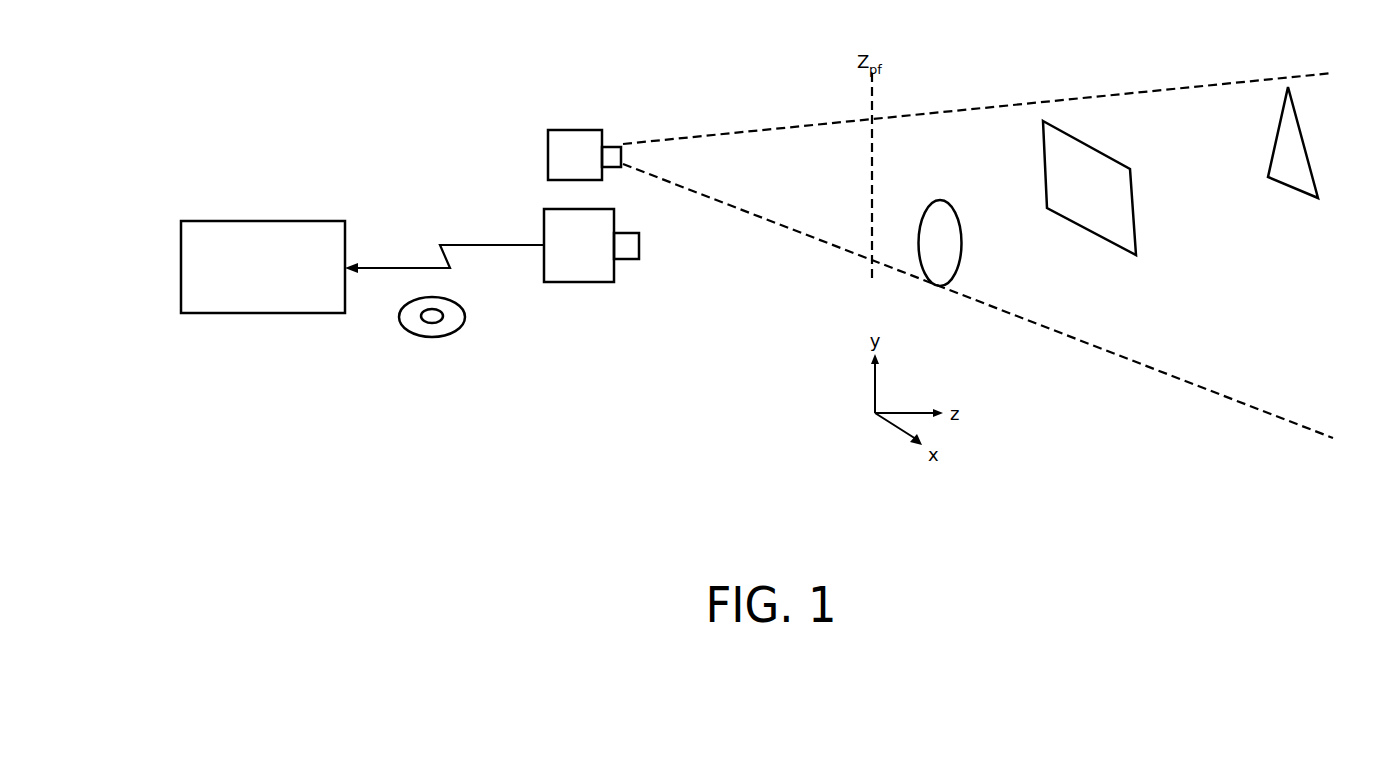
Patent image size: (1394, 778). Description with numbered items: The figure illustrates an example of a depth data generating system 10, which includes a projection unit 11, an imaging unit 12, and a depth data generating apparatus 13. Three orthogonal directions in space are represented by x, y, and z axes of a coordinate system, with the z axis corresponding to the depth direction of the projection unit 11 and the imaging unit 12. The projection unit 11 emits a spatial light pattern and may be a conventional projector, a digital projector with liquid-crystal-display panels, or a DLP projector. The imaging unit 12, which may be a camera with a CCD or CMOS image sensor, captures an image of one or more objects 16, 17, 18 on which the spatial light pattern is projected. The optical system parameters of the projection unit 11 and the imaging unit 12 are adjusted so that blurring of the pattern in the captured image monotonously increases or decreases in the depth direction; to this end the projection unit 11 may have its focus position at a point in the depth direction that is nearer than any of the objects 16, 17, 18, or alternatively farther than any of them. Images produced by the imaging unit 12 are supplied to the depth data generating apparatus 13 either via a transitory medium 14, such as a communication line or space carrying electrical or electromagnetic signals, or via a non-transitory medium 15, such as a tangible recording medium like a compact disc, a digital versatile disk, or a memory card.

The depth data generating system 10 is at (368, 90).
The projection unit 11 is at (572, 130).
The imaging unit 12 is at (581, 284).
The depth data generating apparatus 13 is at (262, 220).
The transitory medium 14 is at (467, 245).
The non-transitory medium 15 is at (430, 337).
The object 16 is at (961, 236).
The object 17 is at (1136, 203).
The object 18 is at (1305, 128).